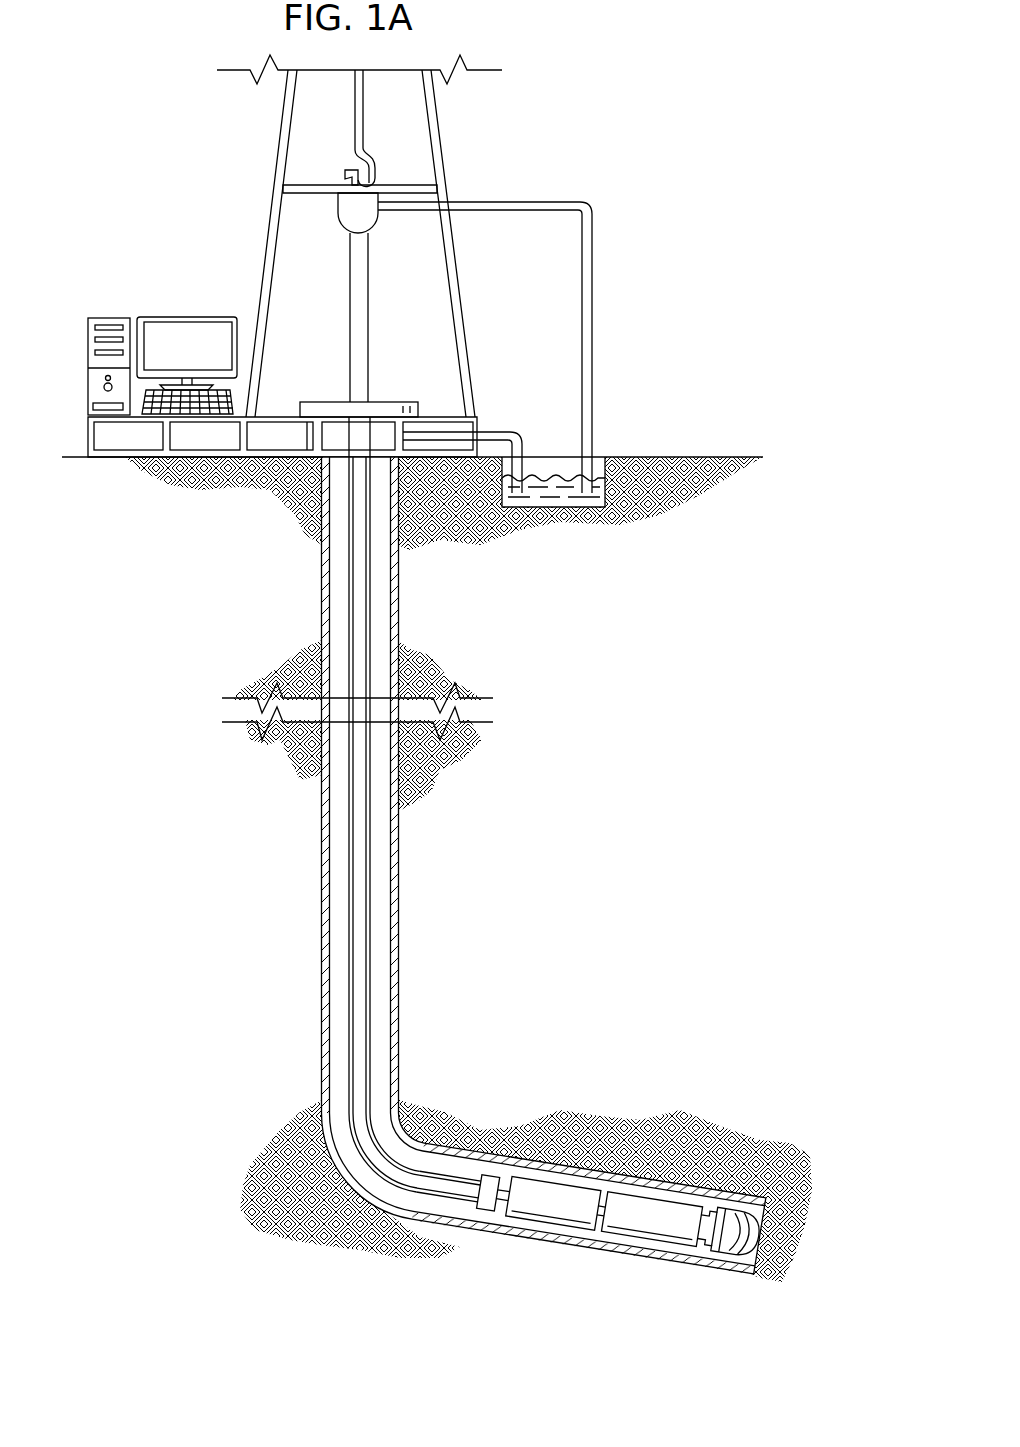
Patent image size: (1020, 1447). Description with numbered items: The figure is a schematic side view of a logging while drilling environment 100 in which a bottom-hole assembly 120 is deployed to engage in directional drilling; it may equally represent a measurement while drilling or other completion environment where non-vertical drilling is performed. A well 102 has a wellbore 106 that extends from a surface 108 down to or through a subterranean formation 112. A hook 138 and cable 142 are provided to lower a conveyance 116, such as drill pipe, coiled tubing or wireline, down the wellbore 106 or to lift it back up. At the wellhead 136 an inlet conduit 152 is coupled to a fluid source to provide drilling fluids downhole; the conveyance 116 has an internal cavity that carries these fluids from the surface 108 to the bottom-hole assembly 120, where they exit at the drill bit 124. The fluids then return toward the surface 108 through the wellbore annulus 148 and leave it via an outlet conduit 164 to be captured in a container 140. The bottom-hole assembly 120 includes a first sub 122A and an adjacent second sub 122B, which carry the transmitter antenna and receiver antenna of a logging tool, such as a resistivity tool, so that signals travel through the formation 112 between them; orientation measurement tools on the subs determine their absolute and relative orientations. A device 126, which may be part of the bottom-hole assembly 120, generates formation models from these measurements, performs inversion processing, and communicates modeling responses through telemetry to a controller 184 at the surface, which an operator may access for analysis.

The LWD environment 100 is at (198, 216).
The well 102 is at (384, 392).
The wellbore 106 is at (395, 605).
The surface 108 is at (735, 457).
The subterranean formation 112 is at (560, 1119).
The conveyance 116 is at (357, 970).
The bottom-hole assembly 120 is at (615, 1272).
The first sub 122A is at (645, 1245).
The second sub 122B is at (527, 1238).
The drill bit 124 is at (733, 1259).
The device 126 is at (487, 1218).
The wellhead 136 is at (335, 401).
The hook 138 is at (375, 168).
The container 140 is at (555, 509).
The cable 142 is at (355, 128).
The wellbore annulus 148 is at (337, 543).
The inlet conduit 152 is at (540, 202).
The outlet conduit 164 is at (498, 432).
The controller 184 is at (105, 318).